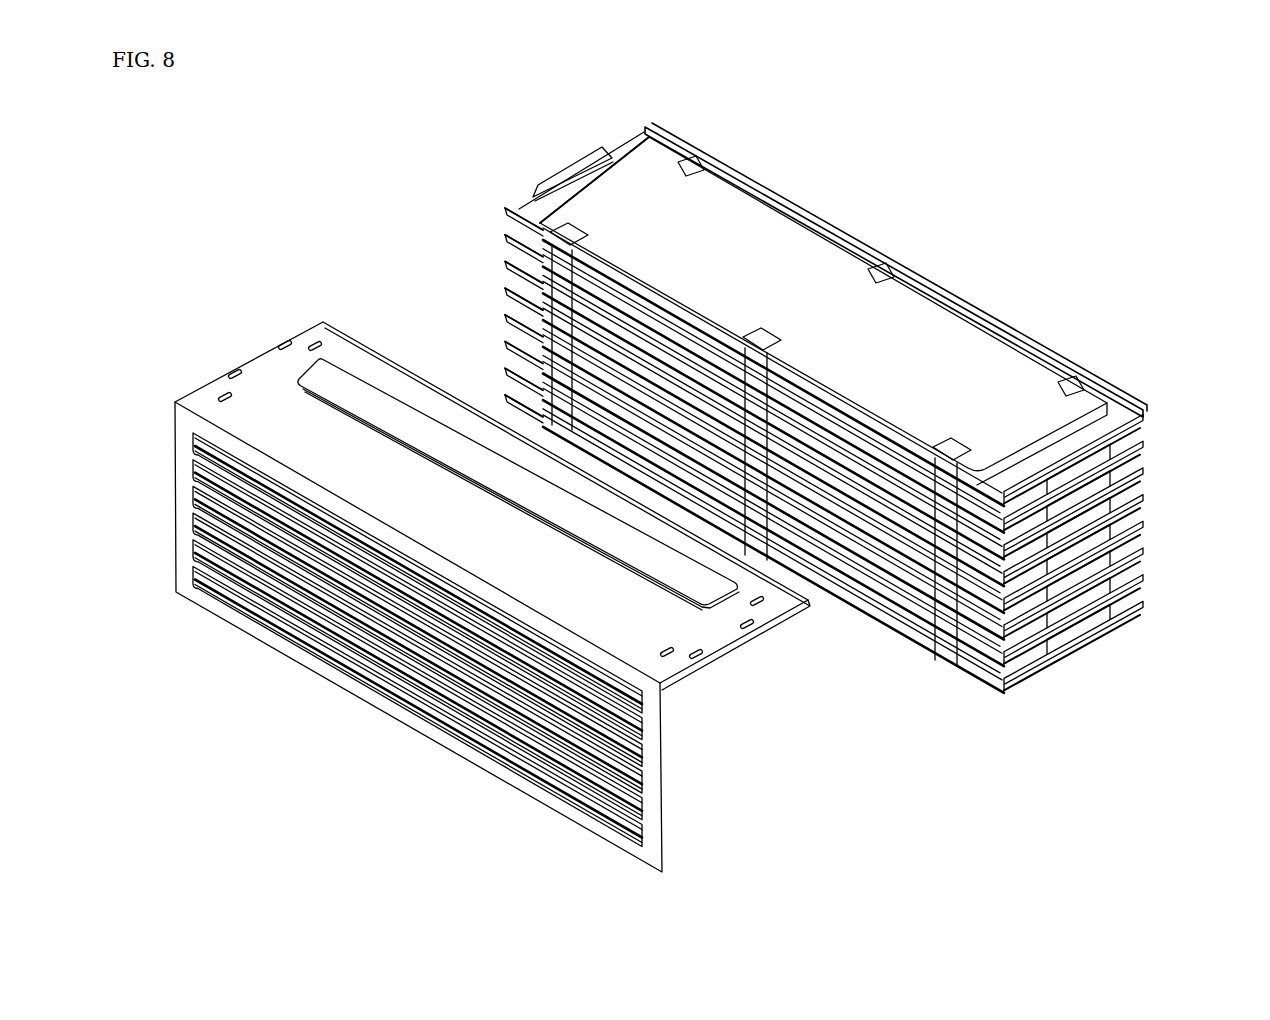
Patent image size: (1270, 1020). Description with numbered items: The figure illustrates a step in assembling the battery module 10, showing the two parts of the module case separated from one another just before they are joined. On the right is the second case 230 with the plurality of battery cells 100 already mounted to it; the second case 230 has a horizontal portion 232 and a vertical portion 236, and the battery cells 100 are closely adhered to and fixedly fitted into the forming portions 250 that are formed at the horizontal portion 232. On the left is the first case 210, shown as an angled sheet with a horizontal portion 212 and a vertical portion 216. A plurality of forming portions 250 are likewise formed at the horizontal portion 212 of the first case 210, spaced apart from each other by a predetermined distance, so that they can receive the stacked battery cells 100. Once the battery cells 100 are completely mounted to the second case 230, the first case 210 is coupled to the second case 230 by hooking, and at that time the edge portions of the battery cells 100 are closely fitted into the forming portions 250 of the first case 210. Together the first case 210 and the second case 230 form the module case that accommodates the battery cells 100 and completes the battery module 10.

The battery module 10 is at (866, 420).
The battery cell 100 is at (618, 203).
The first case 210 is at (461, 592).
The horizontal portion 212 is at (452, 637).
The vertical portion 216 is at (265, 384).
The second case 230 is at (866, 420).
The horizontal portion 232 is at (1140, 517).
The vertical portion 236 is at (1023, 665).
The forming portion 250 is at (441, 730).